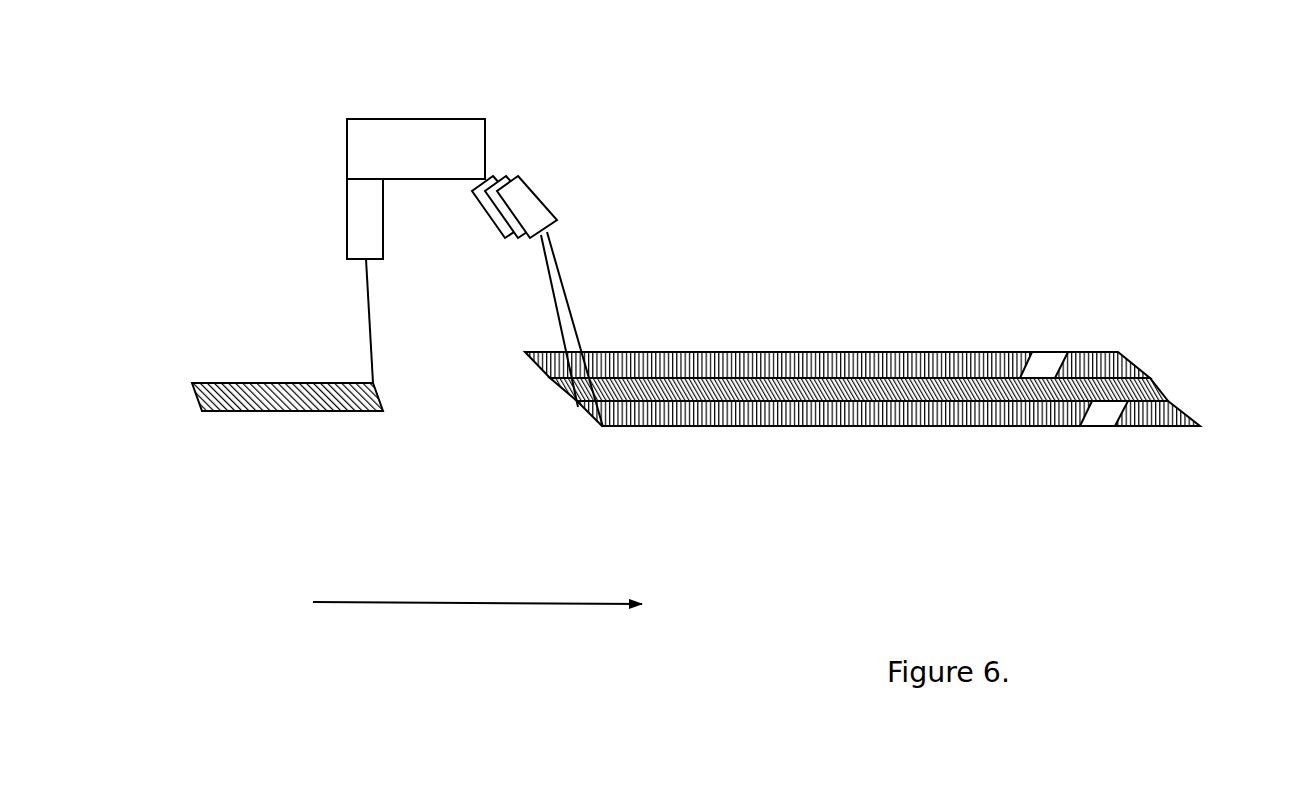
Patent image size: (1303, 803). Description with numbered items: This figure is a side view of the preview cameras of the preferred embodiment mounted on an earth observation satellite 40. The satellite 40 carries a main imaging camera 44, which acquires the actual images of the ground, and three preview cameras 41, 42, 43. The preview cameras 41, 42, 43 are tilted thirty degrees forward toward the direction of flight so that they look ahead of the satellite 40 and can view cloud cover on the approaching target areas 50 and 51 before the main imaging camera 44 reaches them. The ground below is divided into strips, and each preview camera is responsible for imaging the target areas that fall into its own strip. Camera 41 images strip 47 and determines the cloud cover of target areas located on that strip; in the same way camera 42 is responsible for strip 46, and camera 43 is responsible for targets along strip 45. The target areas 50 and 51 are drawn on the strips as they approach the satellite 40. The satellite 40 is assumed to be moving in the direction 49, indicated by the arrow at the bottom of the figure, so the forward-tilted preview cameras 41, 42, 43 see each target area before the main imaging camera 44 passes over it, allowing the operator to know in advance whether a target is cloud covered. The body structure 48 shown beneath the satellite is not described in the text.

The satellite 40 is at (418, 118).
The preview camera 41 is at (573, 217).
The preview camera 42 is at (553, 182).
The preview camera 43 is at (507, 167).
The main imaging camera 44 is at (347, 218).
The strip 45 is at (902, 328).
The strip 46 is at (1187, 368).
The strip 47 is at (1035, 450).
The base 48 is at (255, 398).
The direction of flight 49 is at (477, 578).
The target area 50 is at (1052, 350).
The target area 51 is at (1115, 430).